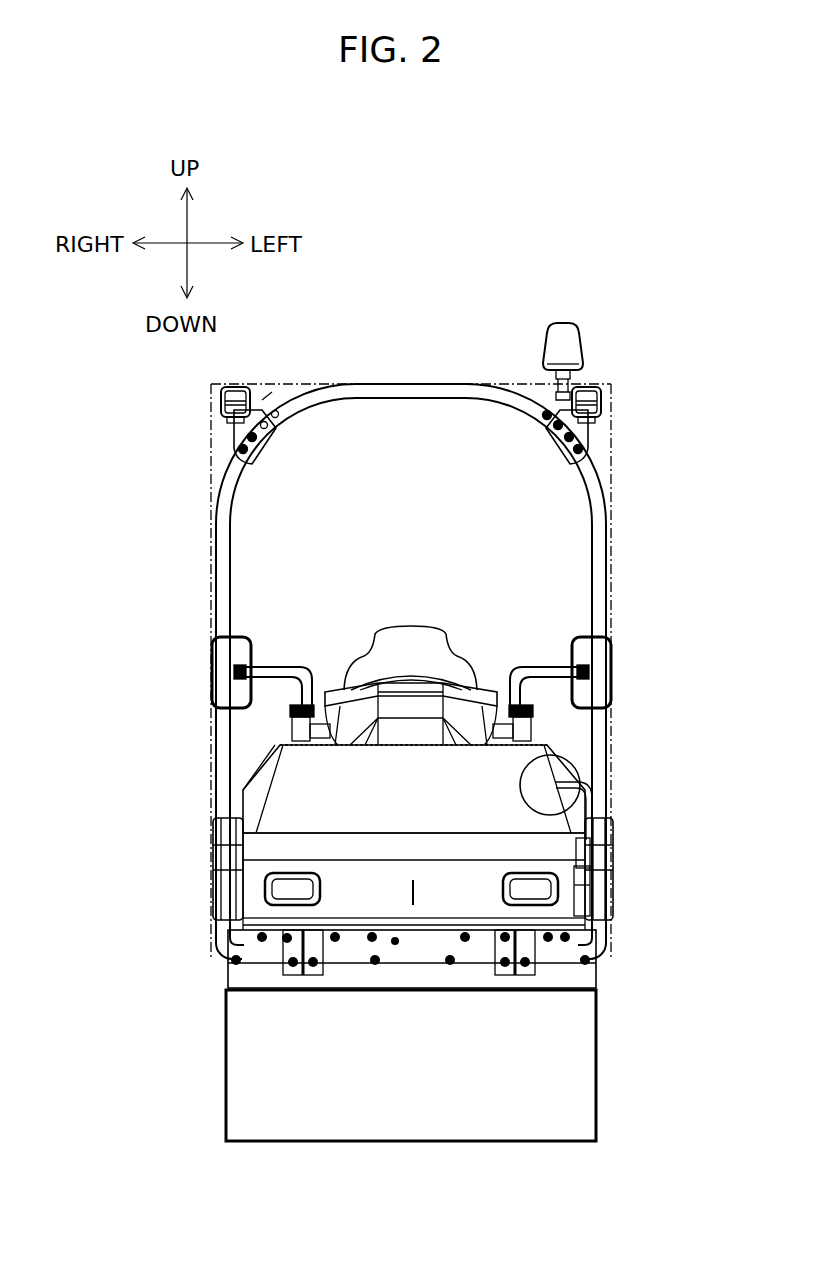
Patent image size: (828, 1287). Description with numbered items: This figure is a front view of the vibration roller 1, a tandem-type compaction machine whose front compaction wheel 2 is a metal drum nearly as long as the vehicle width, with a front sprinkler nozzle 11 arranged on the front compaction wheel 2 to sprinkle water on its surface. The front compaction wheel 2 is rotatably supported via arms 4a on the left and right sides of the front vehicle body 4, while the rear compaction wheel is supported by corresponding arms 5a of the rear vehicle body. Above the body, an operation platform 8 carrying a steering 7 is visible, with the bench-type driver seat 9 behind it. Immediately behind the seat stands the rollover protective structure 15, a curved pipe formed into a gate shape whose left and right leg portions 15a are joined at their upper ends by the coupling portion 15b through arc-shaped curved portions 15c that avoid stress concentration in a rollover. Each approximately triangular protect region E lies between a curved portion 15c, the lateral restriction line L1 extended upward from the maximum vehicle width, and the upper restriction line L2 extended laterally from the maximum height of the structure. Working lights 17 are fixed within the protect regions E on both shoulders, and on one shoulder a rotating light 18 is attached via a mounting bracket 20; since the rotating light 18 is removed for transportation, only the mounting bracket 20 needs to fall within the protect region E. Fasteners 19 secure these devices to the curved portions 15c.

The vibration roller 1 is at (122, 378).
The front compaction wheel 2 is at (568, 1075).
The front vehicle body 4 is at (292, 781).
The arms 4a is at (214, 892).
The arms 5a is at (409, 876).
The steering 7 is at (416, 672).
The operation platform 8 is at (460, 694).
The driver seat 9 is at (390, 632).
The front sprinkler nozzle 11 is at (567, 966).
The rollover protective structure (ROPS) 15 is at (406, 373).
The leg portions 15a is at (216, 578).
The coupling portion 15b is at (360, 386).
The curved portions 15c is at (247, 452).
The working lights 17 is at (222, 403).
The rotating light 18 is at (584, 342).
The bolt 19 is at (258, 454).
The mounting bracket 20 is at (548, 420).
The protect region E is at (272, 392).
The lateral restriction line L1 is at (650, 468).
The upper restriction line L2 is at (527, 383).